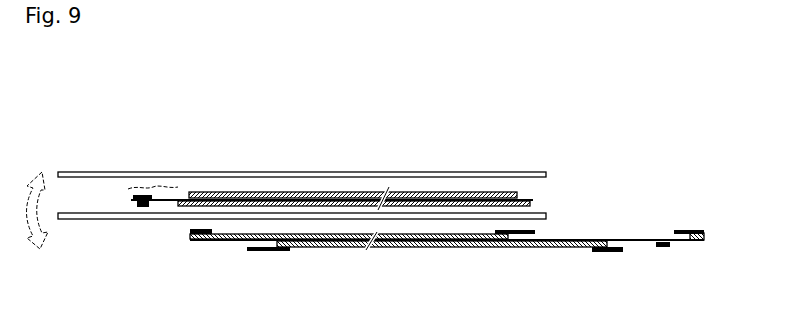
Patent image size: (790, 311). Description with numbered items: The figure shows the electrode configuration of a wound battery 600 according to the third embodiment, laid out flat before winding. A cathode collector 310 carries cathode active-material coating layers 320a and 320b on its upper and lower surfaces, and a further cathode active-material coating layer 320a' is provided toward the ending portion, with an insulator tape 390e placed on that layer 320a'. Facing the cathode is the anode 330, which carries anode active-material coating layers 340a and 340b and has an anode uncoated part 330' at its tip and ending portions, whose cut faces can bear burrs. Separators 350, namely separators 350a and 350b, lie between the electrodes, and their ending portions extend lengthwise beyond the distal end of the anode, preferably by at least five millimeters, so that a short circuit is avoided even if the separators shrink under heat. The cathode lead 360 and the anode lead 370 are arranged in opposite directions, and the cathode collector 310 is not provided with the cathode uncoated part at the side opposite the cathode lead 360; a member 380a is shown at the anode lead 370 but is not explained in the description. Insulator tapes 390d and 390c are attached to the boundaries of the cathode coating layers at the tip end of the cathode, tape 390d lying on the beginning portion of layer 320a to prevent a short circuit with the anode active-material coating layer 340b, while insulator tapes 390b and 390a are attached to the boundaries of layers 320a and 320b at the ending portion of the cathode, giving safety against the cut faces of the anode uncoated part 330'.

The display device 600 is at (499, 100).
The cathode collector 310 is at (652, 234).
The cathode active-material coating layer 320a is at (349, 270).
The cathode active-material coating layer 320a' is at (712, 269).
The cathode active-material coating layer 320b is at (440, 250).
The display panel 330 is at (332, 167).
The anode uncoated part 330' is at (334, 163).
The first adhesive layer 340a is at (447, 190).
The anode active-material coating layer 340b is at (344, 191).
The separators 350 is at (354, 186).
The separator 350a is at (548, 175).
The separator 350b is at (548, 216).
The cathode lead 360 is at (662, 249).
The anode lead 370 is at (143, 208).
The flexible circuit board 380a is at (130, 196).
The insulator tape 390a is at (608, 253).
The insulator tape 390b is at (523, 249).
The insulator tape 390c is at (273, 253).
The insulator tape 390d is at (190, 236).
The insulator tape 390e is at (700, 229).